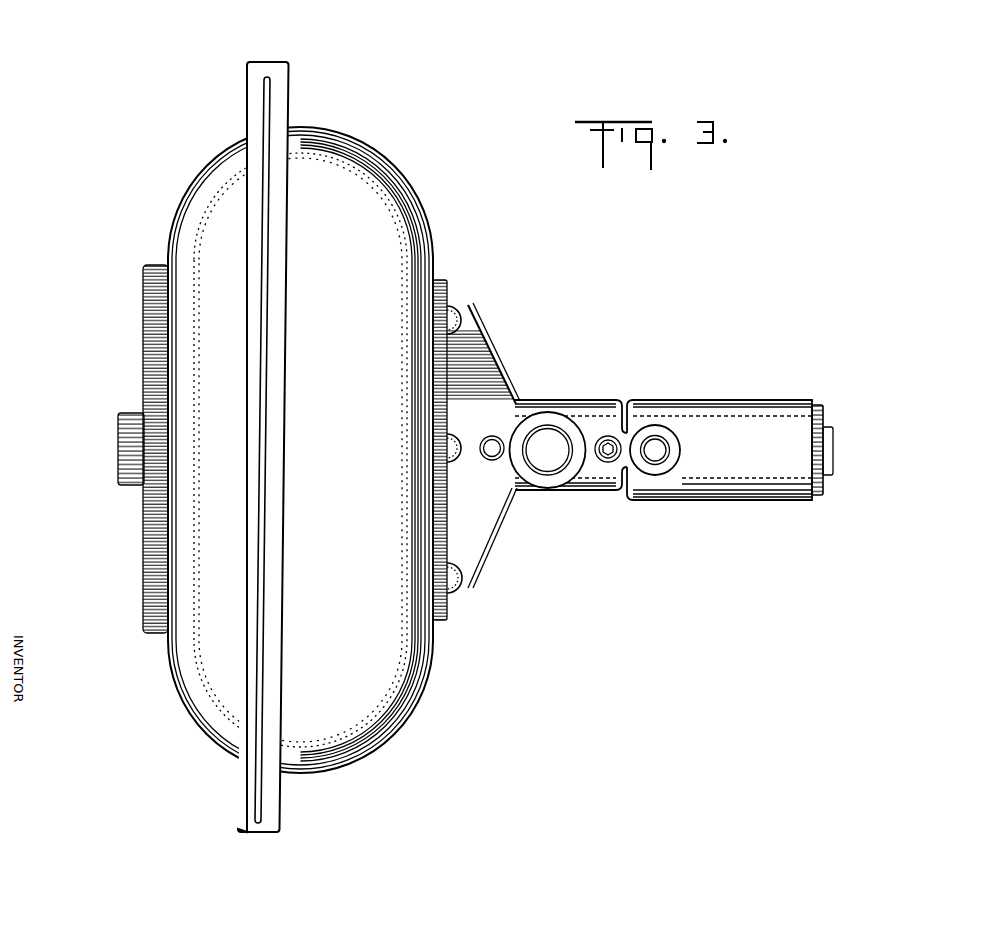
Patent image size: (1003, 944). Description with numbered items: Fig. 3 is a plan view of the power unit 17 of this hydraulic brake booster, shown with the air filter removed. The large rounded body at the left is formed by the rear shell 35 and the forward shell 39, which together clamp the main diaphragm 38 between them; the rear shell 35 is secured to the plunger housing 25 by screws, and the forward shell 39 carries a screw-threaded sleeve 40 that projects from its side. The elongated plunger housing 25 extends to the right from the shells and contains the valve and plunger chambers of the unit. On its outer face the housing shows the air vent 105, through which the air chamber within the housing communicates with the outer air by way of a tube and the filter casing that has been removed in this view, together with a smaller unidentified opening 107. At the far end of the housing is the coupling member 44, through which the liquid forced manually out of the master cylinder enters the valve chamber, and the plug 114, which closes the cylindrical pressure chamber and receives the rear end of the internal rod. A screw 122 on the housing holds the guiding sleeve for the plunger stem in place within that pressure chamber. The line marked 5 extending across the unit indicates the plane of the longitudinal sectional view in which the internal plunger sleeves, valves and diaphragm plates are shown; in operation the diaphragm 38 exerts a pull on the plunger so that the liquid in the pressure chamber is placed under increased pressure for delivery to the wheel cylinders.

The operating lever 5 is at (88, 446).
The power unit 17 is at (662, 462).
The plunger housing 25 is at (722, 424).
The rear shell 35 is at (376, 182).
The main diaphragm 38 is at (263, 425).
The forward shell 39 is at (205, 197).
The screw-threaded sleeve 40 is at (124, 428).
The coupling member 44 is at (820, 483).
The air vent 105 is at (543, 438).
The hole 107 is at (490, 460).
The plug 114 is at (819, 430).
The screw 122 is at (606, 460).